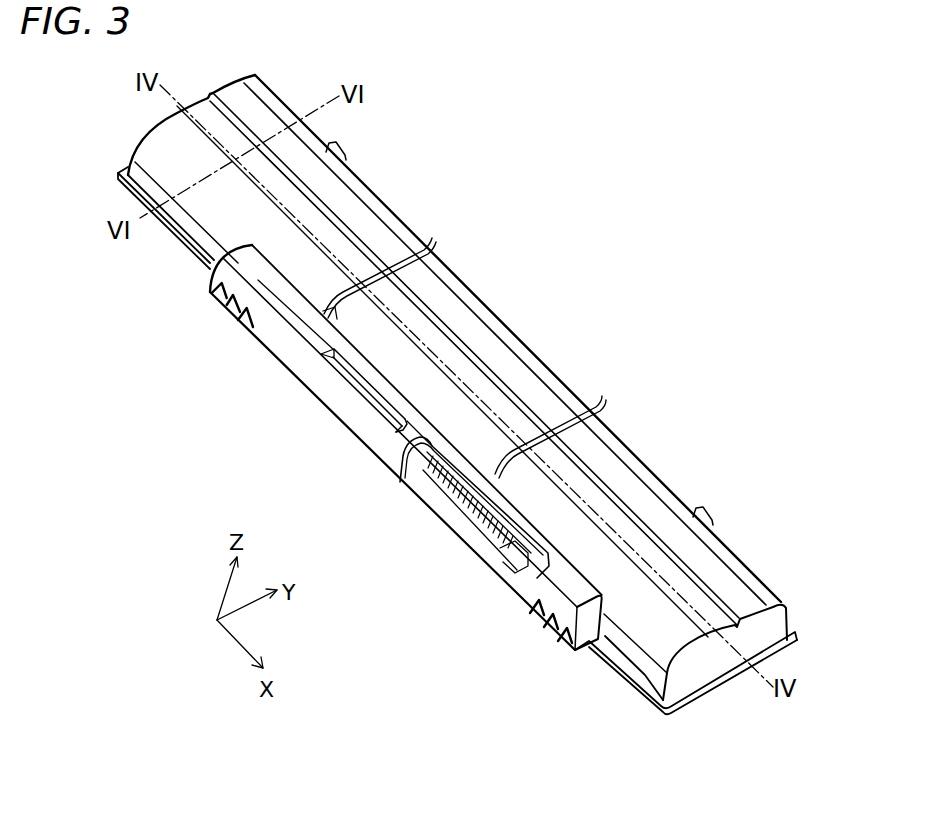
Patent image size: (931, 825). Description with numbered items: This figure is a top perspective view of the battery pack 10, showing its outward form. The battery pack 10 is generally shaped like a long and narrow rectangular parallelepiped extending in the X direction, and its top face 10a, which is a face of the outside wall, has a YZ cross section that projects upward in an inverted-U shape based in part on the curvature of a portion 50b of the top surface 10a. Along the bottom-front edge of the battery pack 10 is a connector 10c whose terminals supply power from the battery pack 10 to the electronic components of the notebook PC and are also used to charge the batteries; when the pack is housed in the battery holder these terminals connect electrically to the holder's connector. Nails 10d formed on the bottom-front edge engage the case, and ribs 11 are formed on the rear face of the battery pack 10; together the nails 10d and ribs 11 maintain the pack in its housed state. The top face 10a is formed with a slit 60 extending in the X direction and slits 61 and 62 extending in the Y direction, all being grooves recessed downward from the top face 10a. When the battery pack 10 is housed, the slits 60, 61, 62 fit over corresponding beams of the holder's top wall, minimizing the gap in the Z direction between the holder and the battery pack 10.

The battery pack 10 is at (640, 210).
The top face 10a is at (457, 313).
The connector 10c is at (446, 528).
The nails 10d is at (214, 301).
The ribs 11 is at (345, 152).
The portion of top surface 50b is at (655, 663).
The slit 60 is at (498, 382).
The slit 61 is at (585, 412).
The slit 62 is at (420, 240).